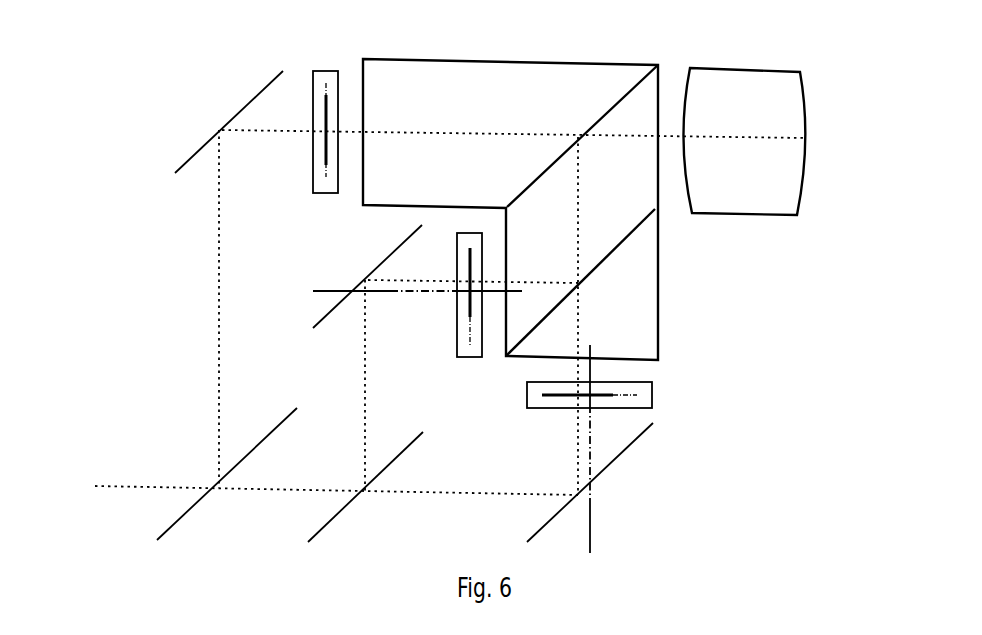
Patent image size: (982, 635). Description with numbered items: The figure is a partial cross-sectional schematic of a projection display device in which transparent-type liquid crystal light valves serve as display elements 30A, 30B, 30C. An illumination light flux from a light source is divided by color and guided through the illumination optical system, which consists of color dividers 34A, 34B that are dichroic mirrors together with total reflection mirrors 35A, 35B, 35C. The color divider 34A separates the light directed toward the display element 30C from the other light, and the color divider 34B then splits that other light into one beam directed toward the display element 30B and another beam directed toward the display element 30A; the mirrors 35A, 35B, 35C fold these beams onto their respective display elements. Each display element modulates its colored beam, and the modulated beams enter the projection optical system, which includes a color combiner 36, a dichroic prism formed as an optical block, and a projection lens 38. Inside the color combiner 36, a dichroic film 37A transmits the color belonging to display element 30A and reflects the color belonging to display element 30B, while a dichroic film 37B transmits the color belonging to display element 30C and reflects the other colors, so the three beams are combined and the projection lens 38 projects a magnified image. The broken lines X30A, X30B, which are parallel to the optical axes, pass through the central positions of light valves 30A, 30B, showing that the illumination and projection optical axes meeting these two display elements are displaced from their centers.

The color combiner 36 is at (640, 308).
The dichroic film 37A is at (633, 238).
The dichroic film 37B is at (618, 102).
The projection lens 38 is at (765, 203).
The display element 30A is at (537, 403).
The display element 30B is at (467, 350).
The display element 30C is at (318, 184).
The color divider 34A is at (257, 443).
The color divider 34B is at (402, 452).
The total reflection mirror 35A is at (637, 440).
The total reflection mirror 35B is at (383, 260).
The total reflection mirror 35C is at (189, 162).
The broken line through center of light valve 30A X30A is at (590, 535).
The broken line through center of light valve 30B X30B is at (413, 293).